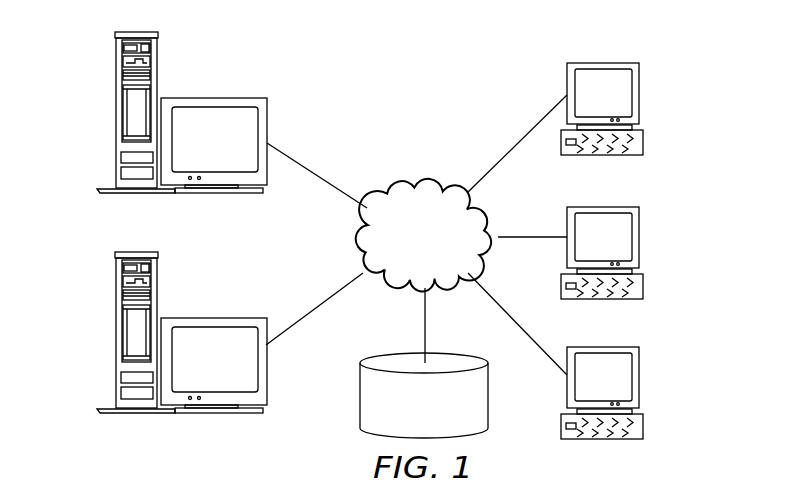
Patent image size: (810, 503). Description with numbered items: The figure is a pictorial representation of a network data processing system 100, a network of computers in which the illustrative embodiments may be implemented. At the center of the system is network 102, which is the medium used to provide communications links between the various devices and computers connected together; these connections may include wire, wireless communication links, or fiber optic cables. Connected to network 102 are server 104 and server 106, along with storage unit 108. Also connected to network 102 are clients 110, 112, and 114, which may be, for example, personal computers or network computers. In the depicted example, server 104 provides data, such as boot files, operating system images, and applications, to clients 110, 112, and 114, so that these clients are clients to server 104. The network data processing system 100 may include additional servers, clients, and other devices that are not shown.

The network data processing system 100 is at (472, 78).
The network 102 is at (396, 185).
The server 104 is at (116, 113).
The server 106 is at (116, 335).
The storage unit 108 is at (360, 405).
The client 110 is at (639, 95).
The client 112 is at (639, 237).
The client 114 is at (639, 378).